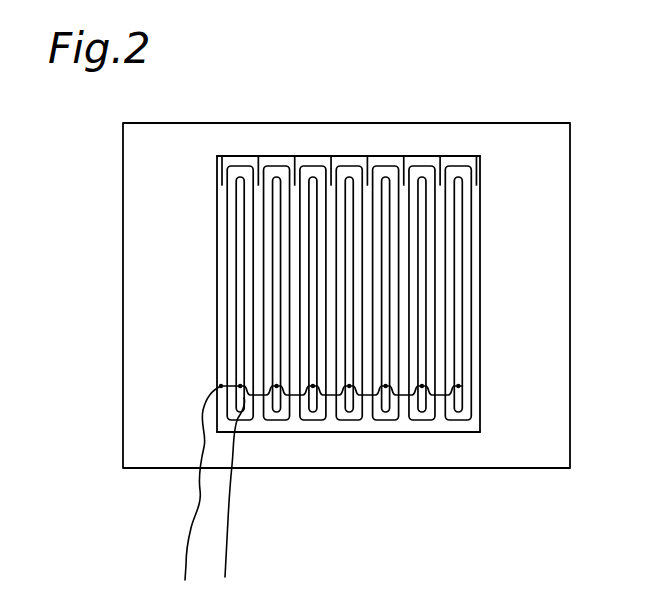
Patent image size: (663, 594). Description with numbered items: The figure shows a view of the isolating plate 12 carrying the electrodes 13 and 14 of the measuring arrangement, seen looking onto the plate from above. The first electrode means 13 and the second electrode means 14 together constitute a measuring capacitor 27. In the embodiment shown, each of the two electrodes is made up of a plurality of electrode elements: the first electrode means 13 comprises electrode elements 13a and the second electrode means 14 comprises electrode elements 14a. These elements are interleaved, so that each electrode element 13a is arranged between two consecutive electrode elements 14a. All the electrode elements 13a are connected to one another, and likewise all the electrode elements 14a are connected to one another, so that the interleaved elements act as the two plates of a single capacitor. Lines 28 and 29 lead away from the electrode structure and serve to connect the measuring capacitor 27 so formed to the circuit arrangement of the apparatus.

The isolating plate 12 is at (497, 462).
The first electrode means 13 is at (342, 456).
The electrode elements of the first electrode 13a is at (348, 415).
The second electrode means 14 is at (347, 130).
The electrode elements of the second electrode 14a is at (295, 165).
The measuring capacitor 27 is at (187, 294).
The line 28 is at (191, 526).
The line 29 is at (227, 557).